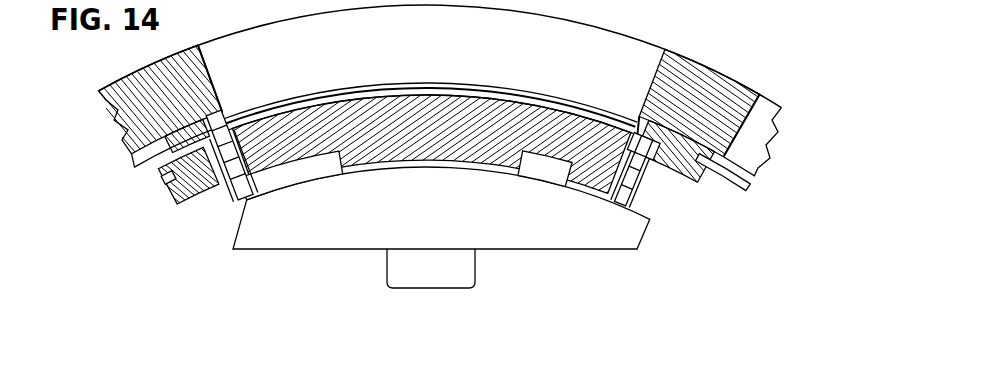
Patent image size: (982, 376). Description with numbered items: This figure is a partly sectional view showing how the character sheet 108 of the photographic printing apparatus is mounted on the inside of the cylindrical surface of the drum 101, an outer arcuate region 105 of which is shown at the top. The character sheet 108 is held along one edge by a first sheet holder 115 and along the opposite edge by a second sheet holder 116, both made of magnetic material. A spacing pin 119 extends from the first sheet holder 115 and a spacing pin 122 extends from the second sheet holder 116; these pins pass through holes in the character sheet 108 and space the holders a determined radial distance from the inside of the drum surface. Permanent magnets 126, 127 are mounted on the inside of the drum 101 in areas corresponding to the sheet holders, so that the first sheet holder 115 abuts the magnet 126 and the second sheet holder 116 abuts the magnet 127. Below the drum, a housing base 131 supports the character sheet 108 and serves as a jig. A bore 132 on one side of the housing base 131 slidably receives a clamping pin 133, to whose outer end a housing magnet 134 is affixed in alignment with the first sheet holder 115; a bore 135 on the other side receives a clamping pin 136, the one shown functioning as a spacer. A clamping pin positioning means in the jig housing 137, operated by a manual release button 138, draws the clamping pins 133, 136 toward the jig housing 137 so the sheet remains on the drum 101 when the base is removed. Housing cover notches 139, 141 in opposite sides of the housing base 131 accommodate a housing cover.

The drum 101 is at (273, 22).
The housing cover 105 is at (589, 26).
The character sheet 108 is at (526, 97).
The first sheet holder 115 is at (158, 150).
The second sheet holder 116 is at (672, 120).
The spacing pin 119 is at (225, 113).
The spacing pin 122 is at (648, 125).
The magnet 126 is at (208, 117).
The magnet 127 is at (660, 115).
The housing base 131 is at (567, 153).
The bore 132 is at (243, 163).
The clamping pin 133 is at (236, 199).
The housing magnet 134 is at (216, 173).
The bore 135 is at (643, 193).
The clamping pin 136 is at (633, 200).
The jig housing 137 is at (541, 242).
The manual release button 138 is at (510, 316).
The housing cover notch 139 is at (168, 195).
The housing cover notch 141 is at (790, 187).